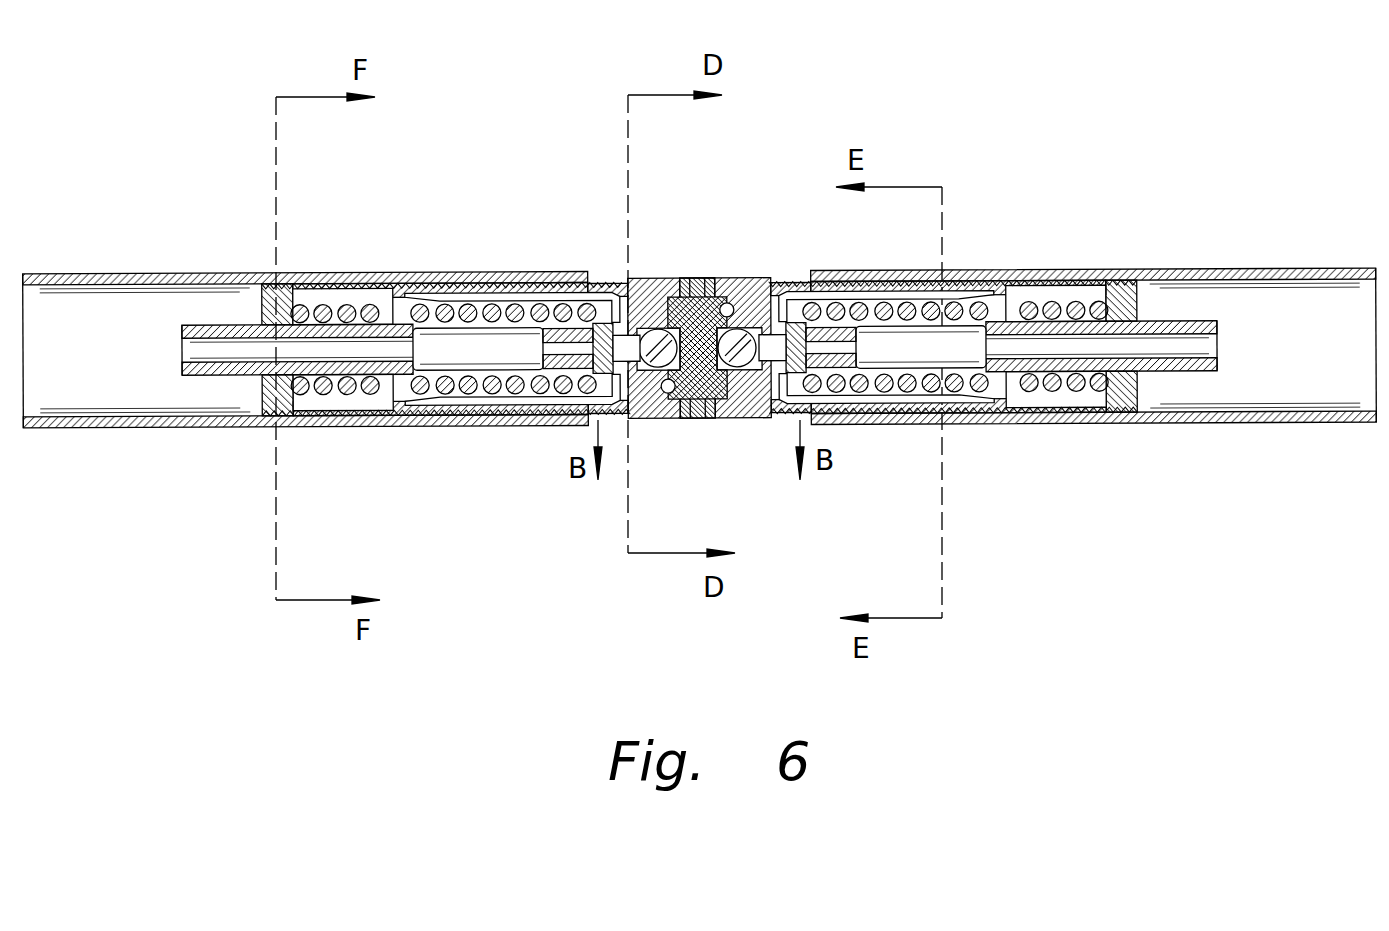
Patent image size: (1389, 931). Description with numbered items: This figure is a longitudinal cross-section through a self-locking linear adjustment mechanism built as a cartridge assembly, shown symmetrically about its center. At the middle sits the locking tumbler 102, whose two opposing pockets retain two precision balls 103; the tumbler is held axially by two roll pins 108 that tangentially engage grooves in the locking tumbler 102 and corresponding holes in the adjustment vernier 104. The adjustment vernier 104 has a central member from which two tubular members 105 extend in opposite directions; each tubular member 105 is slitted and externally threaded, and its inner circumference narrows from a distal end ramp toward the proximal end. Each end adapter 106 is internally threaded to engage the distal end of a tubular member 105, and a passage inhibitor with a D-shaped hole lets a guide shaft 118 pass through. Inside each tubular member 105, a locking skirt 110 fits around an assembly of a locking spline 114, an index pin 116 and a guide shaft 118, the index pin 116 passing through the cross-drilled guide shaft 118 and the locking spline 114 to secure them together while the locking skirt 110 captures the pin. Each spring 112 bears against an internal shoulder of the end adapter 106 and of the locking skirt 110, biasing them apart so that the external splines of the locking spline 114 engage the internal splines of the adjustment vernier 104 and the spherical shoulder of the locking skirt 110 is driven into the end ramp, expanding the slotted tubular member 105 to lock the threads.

The locking tumbler 102 is at (678, 277).
The precision ball 103 is at (748, 420).
The adjustment vernier 104 is at (663, 420).
The tubular member 105 is at (602, 275).
The end adapter 106 is at (100, 271).
The roll pin 108 is at (725, 277).
The locking skirt 110 is at (472, 428).
The spring 112 is at (341, 298).
The locking spline 114 is at (533, 424).
The index pin 116 is at (604, 420).
The guide shaft 118 is at (213, 322).